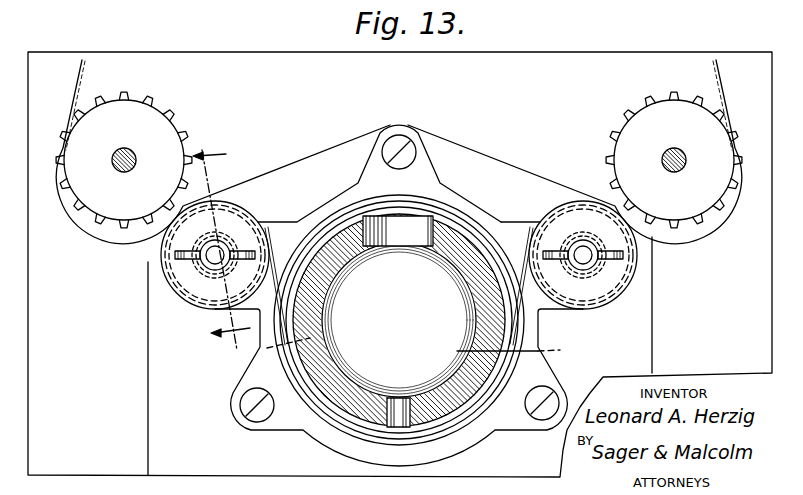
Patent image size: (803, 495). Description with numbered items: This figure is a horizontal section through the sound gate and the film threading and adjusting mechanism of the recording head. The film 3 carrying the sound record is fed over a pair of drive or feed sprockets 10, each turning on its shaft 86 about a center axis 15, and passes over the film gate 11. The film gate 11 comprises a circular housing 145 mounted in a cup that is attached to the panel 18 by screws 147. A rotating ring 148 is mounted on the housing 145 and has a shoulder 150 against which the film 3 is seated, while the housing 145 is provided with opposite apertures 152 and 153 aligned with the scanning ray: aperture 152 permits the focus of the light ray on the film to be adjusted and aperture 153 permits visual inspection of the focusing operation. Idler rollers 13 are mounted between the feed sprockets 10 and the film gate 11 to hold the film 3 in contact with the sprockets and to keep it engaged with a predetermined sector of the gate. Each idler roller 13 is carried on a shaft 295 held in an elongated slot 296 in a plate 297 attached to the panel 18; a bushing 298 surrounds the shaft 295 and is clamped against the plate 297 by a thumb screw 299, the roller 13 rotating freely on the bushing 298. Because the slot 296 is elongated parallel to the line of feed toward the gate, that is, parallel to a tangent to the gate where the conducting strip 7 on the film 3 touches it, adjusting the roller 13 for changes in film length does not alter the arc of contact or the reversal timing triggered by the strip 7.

The film 3 is at (82, 80).
The conducting strip 7 is at (413, 350).
The feed sprocket 10 is at (152, 117).
The film gate 11 is at (470, 229).
The idler roller 13 is at (185, 275).
The pulley swing axis 15 is at (221, 249).
The panel 18 is at (163, 352).
The sprocket shaft 86 is at (136, 162).
The circular housing 145 is at (355, 402).
The screw 147 is at (395, 155).
The rotating ring 148 is at (468, 403).
The shoulder 150 is at (313, 403).
The aperture 152 is at (402, 398).
The aperture 153 is at (410, 233).
The shaft 295 is at (217, 253).
The elongated slot 296 is at (178, 245).
The plate 297 is at (523, 224).
The bushing 298 is at (222, 232).
The thumb screw 299 is at (190, 277).